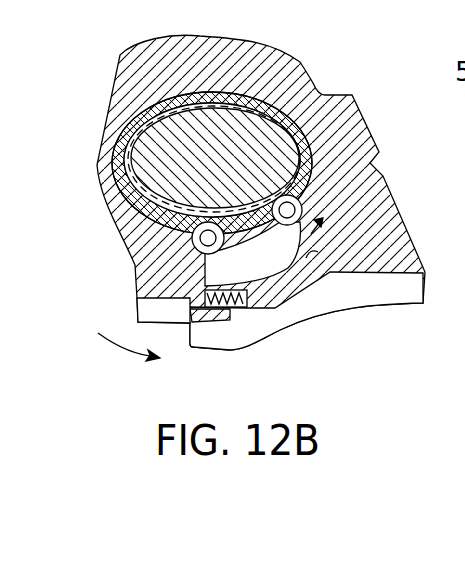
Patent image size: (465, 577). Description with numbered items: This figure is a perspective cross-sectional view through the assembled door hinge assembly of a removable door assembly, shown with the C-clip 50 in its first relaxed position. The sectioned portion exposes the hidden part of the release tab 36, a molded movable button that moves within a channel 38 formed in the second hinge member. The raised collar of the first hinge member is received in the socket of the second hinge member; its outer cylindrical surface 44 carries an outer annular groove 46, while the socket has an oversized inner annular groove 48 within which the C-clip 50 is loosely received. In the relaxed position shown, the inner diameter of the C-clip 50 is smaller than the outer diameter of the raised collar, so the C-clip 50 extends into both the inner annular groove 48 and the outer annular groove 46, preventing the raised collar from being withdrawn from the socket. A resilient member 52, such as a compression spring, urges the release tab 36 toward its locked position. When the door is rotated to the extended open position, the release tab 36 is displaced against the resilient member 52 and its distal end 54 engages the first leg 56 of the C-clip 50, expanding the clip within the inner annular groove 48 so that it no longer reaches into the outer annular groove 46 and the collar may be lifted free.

The release tab 36 is at (148, 310).
The channel 38 is at (320, 254).
The outer cylindrical surface 44 is at (214, 250).
The outer annular groove 46 is at (292, 146).
The inner annular groove 48 is at (262, 106).
The C-clip 50 is at (137, 120).
The resilient member 52 is at (222, 306).
The distal end 54 is at (308, 262).
The first leg 56 is at (300, 198).